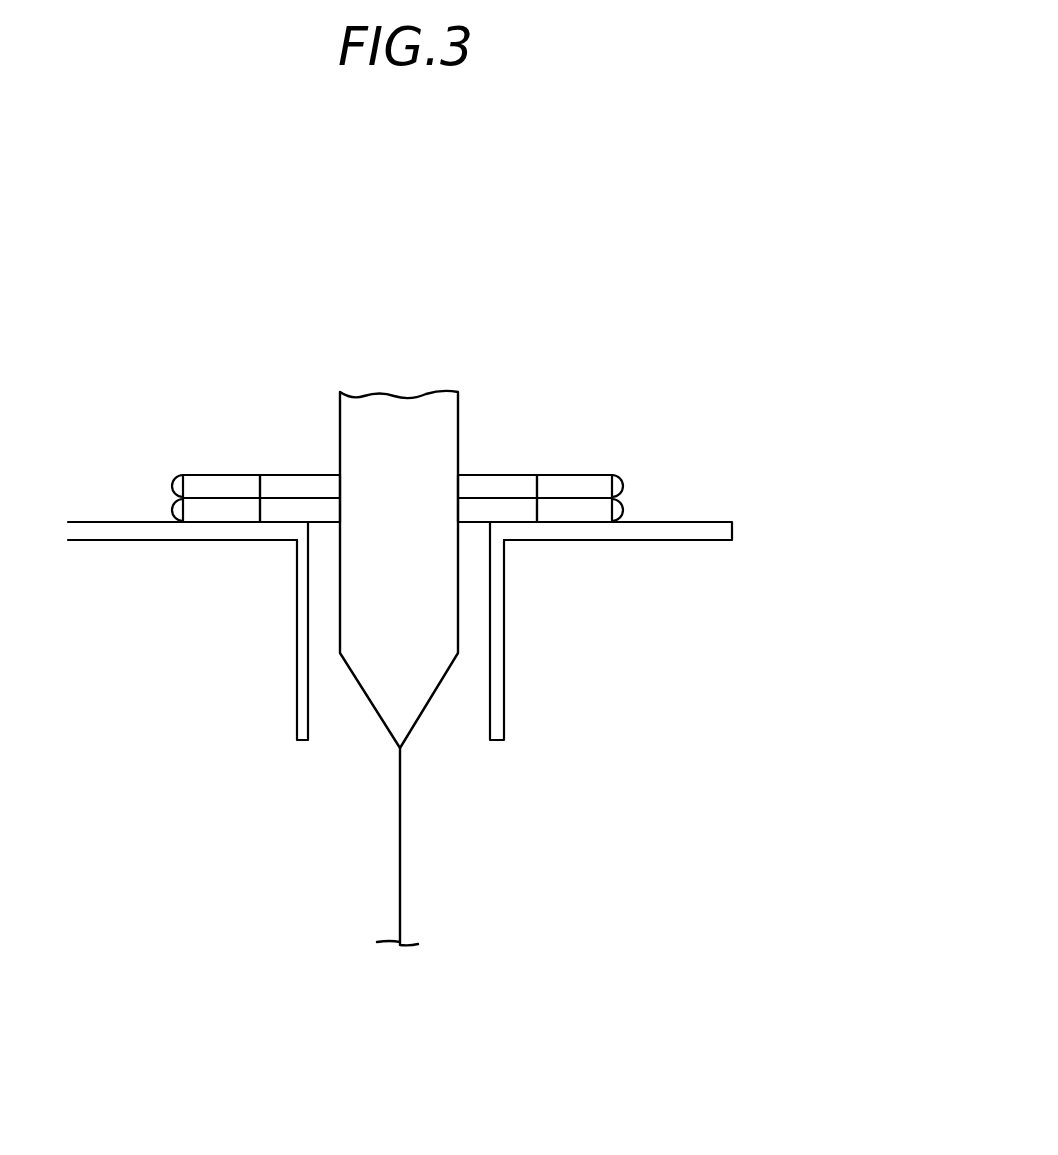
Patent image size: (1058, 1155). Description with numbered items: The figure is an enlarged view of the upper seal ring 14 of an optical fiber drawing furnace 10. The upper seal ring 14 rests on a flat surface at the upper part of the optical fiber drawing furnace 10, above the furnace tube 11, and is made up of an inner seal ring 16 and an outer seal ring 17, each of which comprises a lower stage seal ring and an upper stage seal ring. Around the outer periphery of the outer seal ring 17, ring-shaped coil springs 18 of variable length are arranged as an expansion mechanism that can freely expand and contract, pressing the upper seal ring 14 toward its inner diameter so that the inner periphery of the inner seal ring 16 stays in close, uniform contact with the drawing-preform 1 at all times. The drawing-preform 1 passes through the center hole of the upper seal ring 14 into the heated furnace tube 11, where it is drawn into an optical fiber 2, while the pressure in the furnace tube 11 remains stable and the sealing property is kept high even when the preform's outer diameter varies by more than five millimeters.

The drawing-preform 1 is at (340, 440).
The optical fiber 2 is at (401, 880).
The optical fiber drawing furnace 10 is at (533, 271).
The furnace tube 11 is at (498, 702).
The upper seal ring 14 is at (537, 405).
The inner seal ring 16 is at (515, 482).
The outer seal ring 17 is at (580, 483).
The coil spring 18 is at (640, 494).